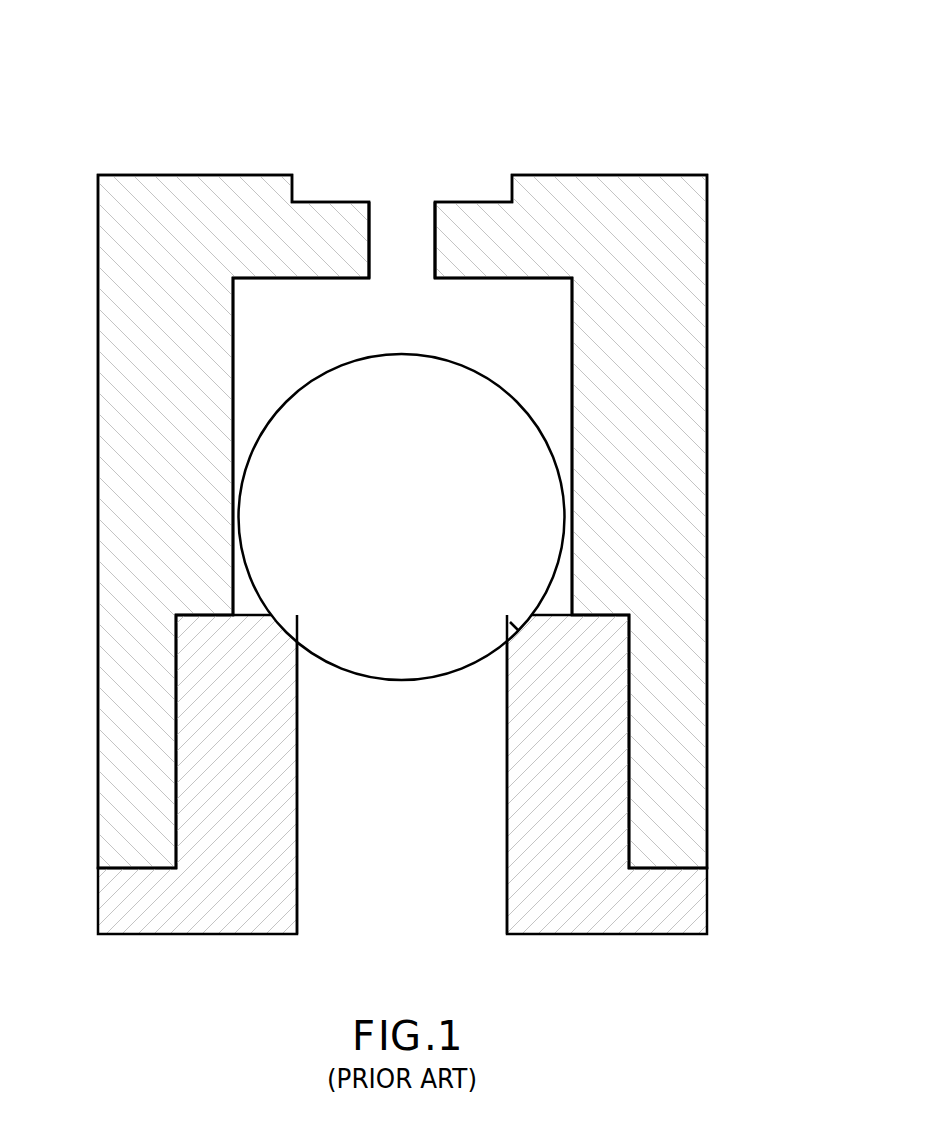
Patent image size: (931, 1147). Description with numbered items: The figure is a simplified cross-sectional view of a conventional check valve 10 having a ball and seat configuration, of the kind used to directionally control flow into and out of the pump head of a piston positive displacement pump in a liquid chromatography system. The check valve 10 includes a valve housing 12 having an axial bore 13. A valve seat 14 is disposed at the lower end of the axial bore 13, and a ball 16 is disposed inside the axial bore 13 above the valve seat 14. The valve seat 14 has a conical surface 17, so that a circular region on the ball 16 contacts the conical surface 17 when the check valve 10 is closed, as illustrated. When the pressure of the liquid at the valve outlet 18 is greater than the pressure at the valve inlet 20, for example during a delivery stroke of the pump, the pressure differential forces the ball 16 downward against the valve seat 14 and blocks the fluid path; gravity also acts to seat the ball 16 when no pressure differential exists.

The check valve 10 is at (791, 106).
The valve housing 12 is at (98, 348).
The axial bore 13 is at (273, 324).
The valve seat 14 is at (98, 898).
The ball 16 is at (416, 531).
The conical surface 17 is at (515, 628).
The valve outlet 18 is at (426, 195).
The valve inlet 20 is at (349, 938).